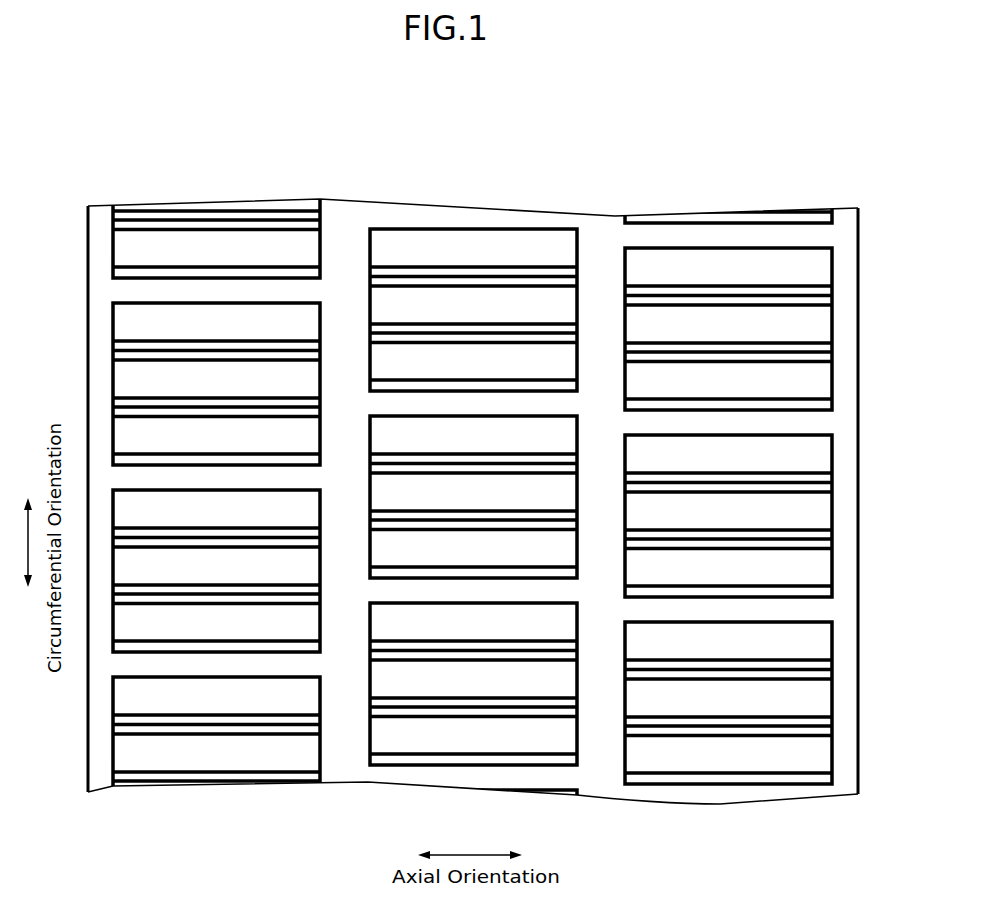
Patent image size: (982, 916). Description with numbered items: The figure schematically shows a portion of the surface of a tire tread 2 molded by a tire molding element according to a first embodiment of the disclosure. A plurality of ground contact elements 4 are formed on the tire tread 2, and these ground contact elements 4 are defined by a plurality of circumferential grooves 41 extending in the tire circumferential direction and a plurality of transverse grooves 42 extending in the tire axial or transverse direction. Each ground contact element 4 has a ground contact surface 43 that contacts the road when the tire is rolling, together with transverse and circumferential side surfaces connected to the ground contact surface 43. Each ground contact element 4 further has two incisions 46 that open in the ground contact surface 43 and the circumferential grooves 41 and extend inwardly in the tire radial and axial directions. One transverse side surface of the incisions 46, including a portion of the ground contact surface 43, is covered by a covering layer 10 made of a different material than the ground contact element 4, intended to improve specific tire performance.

The tire tread 2 is at (620, 205).
The ground contact element 4 is at (422, 230).
The covering layer 10 is at (397, 273).
The circumferential groove 41 is at (357, 558).
The transverse groove 42 is at (482, 600).
The ground contact surface 43 is at (487, 257).
The incision 46 is at (372, 282).